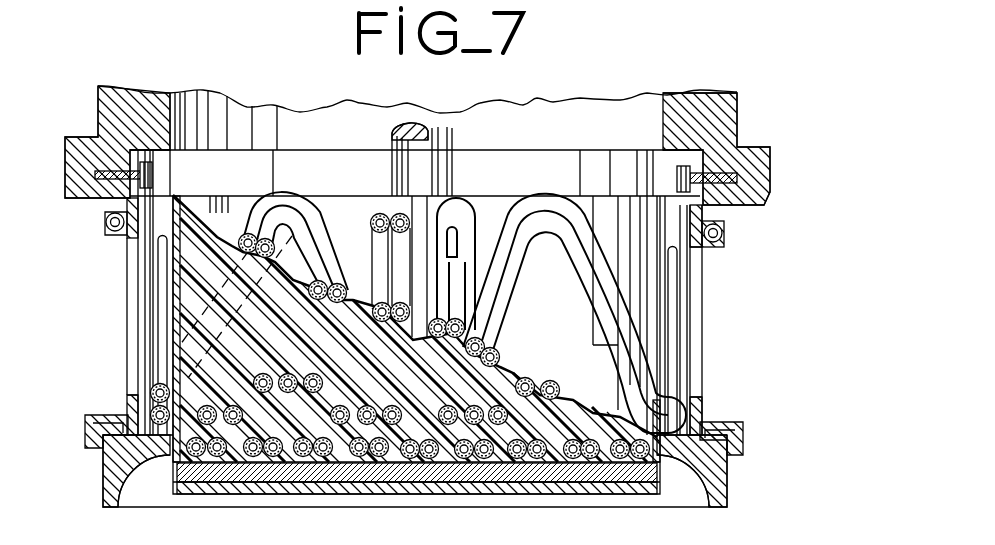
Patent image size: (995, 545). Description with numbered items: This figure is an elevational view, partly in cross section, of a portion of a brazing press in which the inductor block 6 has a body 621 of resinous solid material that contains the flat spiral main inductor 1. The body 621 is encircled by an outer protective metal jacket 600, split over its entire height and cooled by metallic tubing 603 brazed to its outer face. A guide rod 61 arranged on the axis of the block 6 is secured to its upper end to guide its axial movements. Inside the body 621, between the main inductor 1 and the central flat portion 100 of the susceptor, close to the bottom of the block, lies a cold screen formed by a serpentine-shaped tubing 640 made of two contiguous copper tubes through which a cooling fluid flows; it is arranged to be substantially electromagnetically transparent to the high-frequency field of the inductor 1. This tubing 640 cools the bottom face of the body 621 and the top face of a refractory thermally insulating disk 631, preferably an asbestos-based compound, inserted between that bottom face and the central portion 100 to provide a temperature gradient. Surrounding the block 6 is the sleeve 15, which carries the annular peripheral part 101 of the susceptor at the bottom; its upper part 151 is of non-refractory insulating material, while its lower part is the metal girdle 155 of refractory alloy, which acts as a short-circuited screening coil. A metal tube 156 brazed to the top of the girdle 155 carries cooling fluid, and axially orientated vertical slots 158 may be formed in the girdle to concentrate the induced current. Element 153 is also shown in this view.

The main inductor 1 is at (347, 405).
The inductor block 6 is at (284, 192).
The sleeve 15 is at (107, 243).
The guide rod 61 is at (390, 145).
The central flat portion of the susceptor 100 is at (386, 494).
The annular peripheral part of the susceptor 101 is at (716, 485).
The upper part of the sleeve 151 is at (737, 110).
The fastening bolt 153 is at (757, 172).
The metal girdle 155 is at (128, 412).
The metal tube 156 is at (722, 235).
The vertical slots 158 is at (690, 248).
The outer protective metal jacket 600 is at (478, 213).
The metallic tubing 603 is at (308, 200).
The body of the inductor block 621 is at (226, 204).
The refractory thermally insulating disk 631 is at (560, 477).
The serpentine-shaped tubing 640 is at (290, 456).